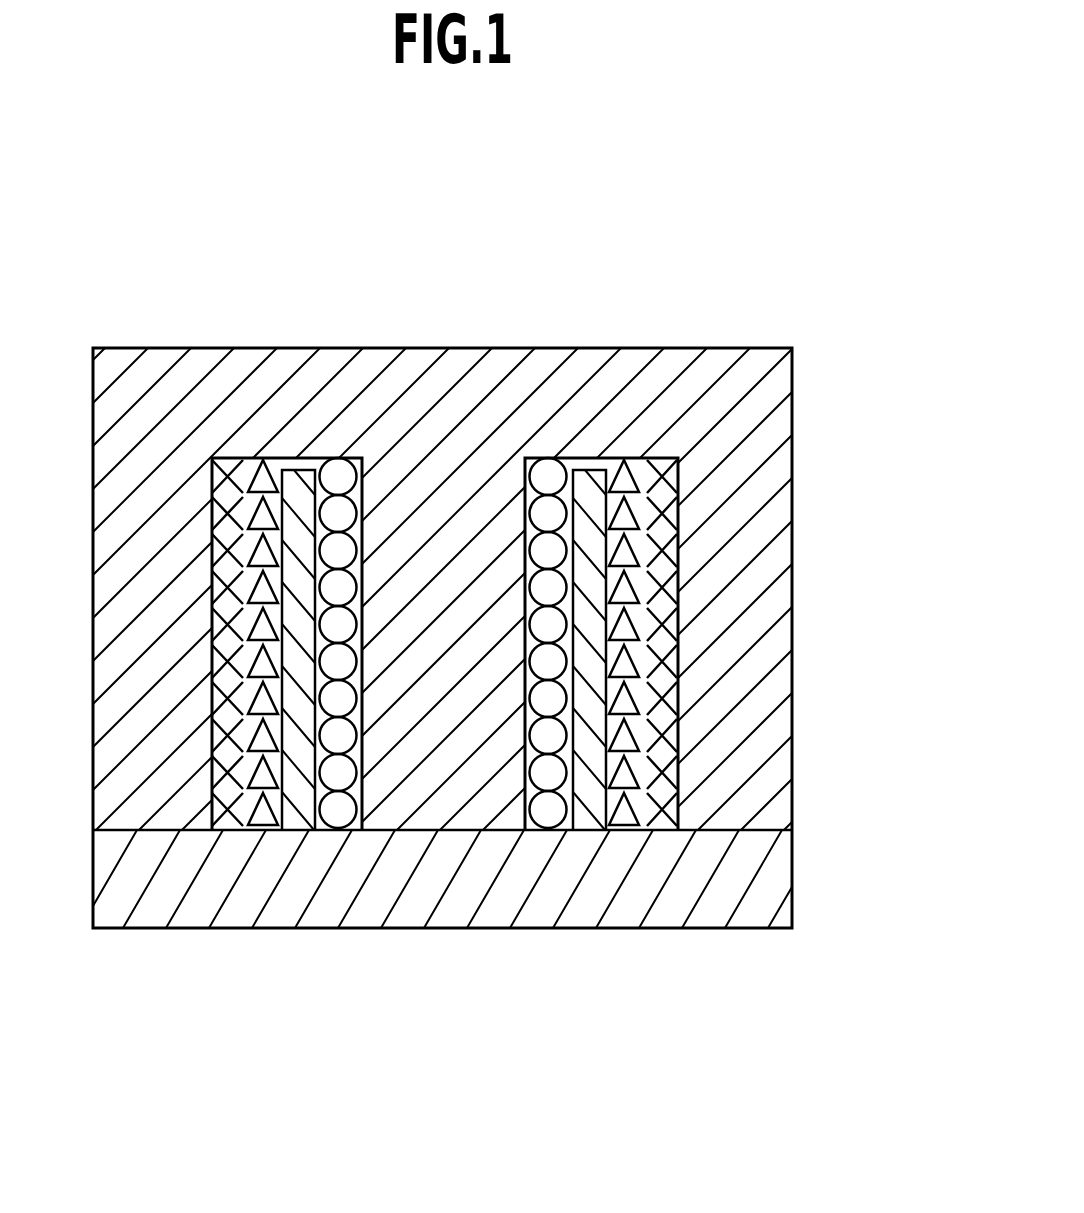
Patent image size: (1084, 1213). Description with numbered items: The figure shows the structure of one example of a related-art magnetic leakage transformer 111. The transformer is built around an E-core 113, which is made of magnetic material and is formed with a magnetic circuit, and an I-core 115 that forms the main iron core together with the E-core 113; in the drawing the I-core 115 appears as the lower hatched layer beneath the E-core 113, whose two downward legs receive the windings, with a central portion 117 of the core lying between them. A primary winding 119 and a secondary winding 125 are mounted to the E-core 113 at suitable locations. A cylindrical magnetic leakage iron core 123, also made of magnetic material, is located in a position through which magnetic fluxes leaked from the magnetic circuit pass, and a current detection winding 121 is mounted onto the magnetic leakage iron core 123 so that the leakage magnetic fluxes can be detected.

The magnetic leakage transformer 111 is at (512, 348).
The E-core 113 is at (772, 583).
The I-core 115 is at (772, 878).
The pillar region between trenches 117 is at (415, 813).
The primary winding 119 is at (550, 830).
The magnetic leakage iron core 123 is at (590, 828).
The current detection winding 121 is at (627, 828).
The secondary winding 125 is at (665, 828).